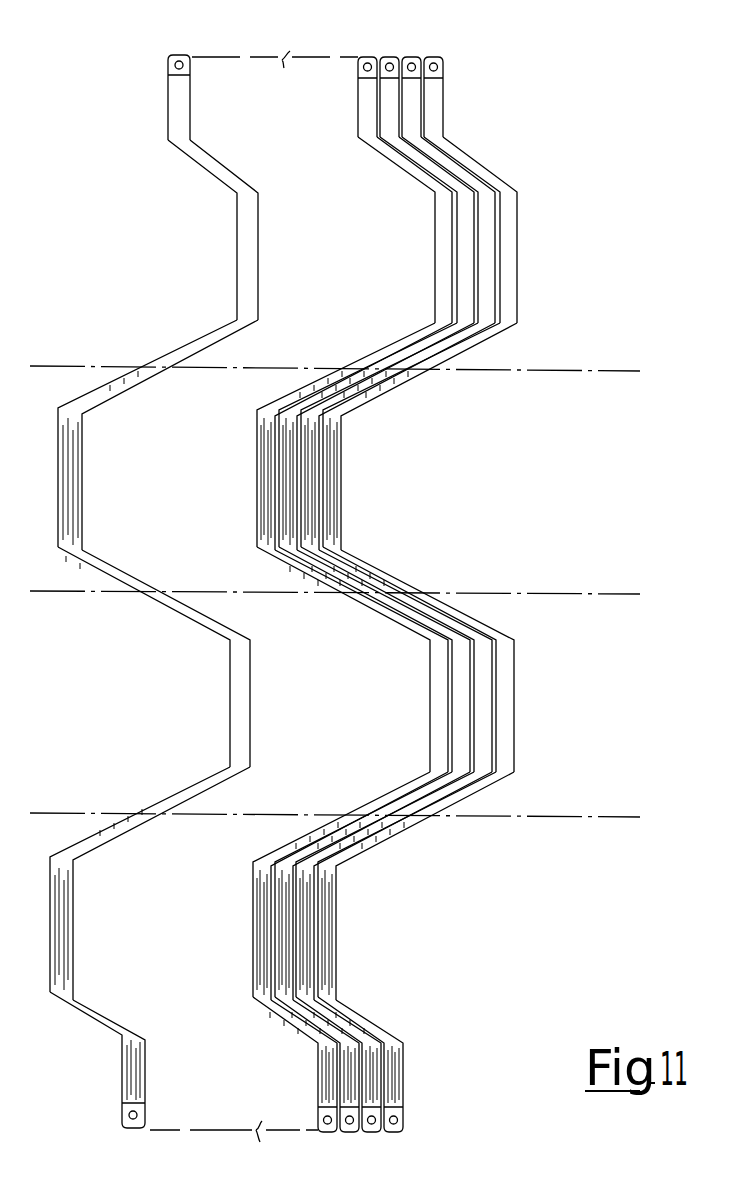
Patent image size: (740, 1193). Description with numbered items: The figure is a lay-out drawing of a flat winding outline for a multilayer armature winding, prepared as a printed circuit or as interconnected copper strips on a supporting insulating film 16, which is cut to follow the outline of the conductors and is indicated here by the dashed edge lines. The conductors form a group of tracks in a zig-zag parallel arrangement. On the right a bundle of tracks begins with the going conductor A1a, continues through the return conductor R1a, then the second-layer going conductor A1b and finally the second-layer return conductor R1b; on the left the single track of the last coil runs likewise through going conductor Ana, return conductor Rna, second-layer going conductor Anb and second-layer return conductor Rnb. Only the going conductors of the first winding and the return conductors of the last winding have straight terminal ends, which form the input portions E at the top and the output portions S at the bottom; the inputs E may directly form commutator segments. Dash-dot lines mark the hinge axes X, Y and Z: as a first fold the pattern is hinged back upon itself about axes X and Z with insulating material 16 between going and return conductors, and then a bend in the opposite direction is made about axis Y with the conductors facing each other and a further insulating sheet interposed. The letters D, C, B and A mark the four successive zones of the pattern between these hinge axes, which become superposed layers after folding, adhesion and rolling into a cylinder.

The insulating support film 16 is at (254, 591).
The input portion E is at (458, 89).
The output portion S is at (417, 1056).
The going conductor of the first layer (n-th) Ana is at (258, 206).
The going conductor of the first layer (first) A1a is at (517, 206).
The return conductor of the first layer (n-th) Rna is at (82, 453).
The return conductor of the first layer (first) R1a is at (342, 455).
The going conductor of the second layer (n-th) Anb is at (250, 653).
The going conductor of the second layer (first) A1b is at (515, 653).
The return conductor of the second layer (n-th) Rnb is at (73, 891).
The return conductor of the second layer (first) R1b is at (336, 912).
The zone A is at (593, 918).
The zone B is at (608, 692).
The zone C is at (615, 486).
The zone D is at (617, 276).
The hinge axis X— X is at (333, 354).
The hinge axis Y— Y is at (332, 580).
The hinge axis Z— Z is at (333, 804).